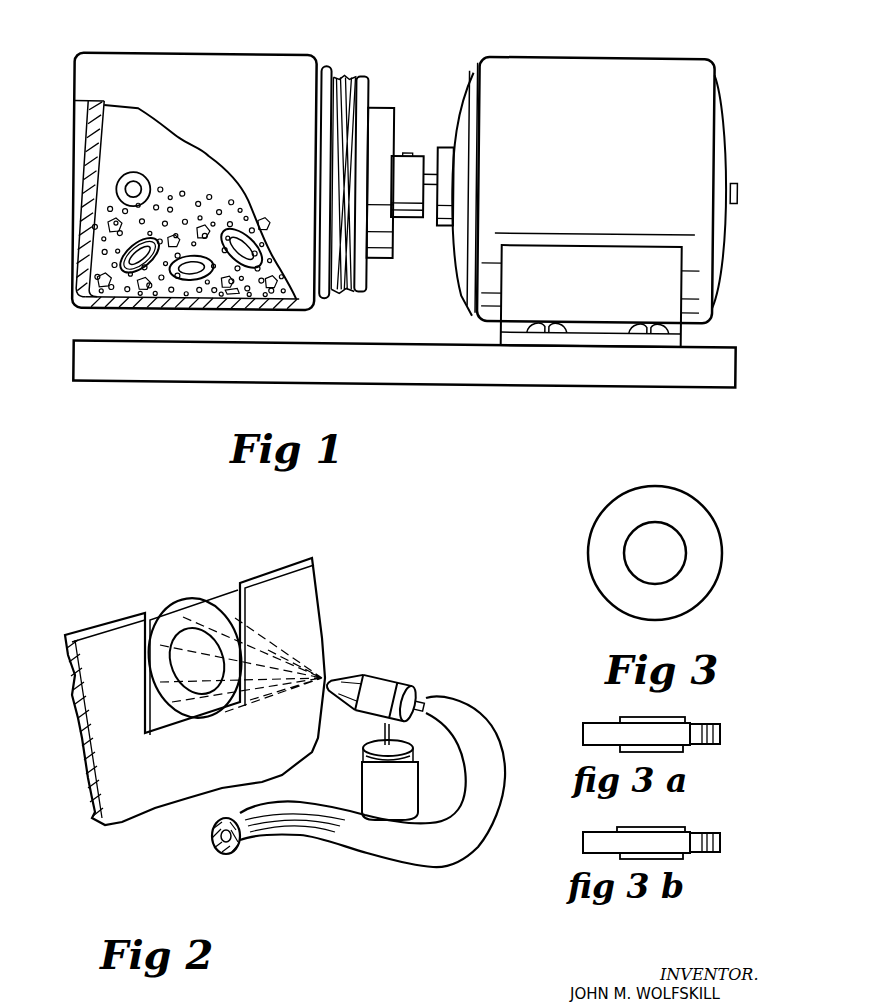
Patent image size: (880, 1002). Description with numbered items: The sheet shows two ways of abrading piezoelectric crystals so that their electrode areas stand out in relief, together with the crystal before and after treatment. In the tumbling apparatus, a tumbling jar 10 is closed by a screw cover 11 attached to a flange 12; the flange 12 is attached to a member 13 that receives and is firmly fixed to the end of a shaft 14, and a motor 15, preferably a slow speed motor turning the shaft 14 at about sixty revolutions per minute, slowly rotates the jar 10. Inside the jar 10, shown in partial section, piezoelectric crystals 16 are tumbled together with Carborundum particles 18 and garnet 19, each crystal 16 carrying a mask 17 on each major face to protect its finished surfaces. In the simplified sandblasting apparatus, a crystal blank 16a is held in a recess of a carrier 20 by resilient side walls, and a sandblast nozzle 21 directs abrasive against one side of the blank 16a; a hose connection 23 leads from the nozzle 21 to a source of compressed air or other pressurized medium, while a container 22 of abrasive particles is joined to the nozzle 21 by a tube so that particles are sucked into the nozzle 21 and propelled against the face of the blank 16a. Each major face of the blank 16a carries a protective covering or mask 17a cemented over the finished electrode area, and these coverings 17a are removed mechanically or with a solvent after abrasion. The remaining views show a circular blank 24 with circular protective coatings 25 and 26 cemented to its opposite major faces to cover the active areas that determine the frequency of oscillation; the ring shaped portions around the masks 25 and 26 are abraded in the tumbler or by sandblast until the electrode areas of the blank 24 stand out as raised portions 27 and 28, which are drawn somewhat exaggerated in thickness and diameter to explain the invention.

In FIG. 1, the tumbling jar 10 is at (244, 70).
In FIG. 1, the screw cover 11 is at (350, 78).
In FIG. 1, the flange 12 is at (393, 112).
In FIG. 1, the member 13 is at (410, 155).
In FIG. 1, the shaft 14 is at (432, 200).
In FIG. 1, the motor 15 is at (522, 70).
In FIG. 1, the piezoelectric crystals 16 is at (117, 190).
In FIG. 1, the mask 17 is at (128, 196).
In FIG. 1, the Carborundum particles 18 is at (193, 283).
In FIG. 1, the garnet 19 is at (279, 302).
In FIG. 2, the crystal blank 16a is at (170, 628).
In FIG. 2, the protective covering or mask 17a is at (199, 648).
In FIG. 2, the carrier 20 is at (265, 595).
In FIG. 2, the sandblast nozzle 21 is at (388, 690).
In FIG. 2, the container for abrasive particles 22 is at (368, 784).
In FIG. 2, the hose connection 23 is at (330, 840).
In FIG. 3, the circular blank 24 is at (597, 566).
In FIG. 3A, the circular blank 24 is at (590, 733).
In FIG. 3B, the circular blank 24 is at (590, 843).
In FIG. 3, the protective coating 25 is at (642, 568).
In FIG. 3A, the protective coating 25 is at (632, 717).
In FIG. 3A, the protective coating 26 is at (683, 752).
In FIG. 3B, the raised portion 27 is at (642, 827).
In FIG. 3B, the raised portion 28 is at (683, 859).